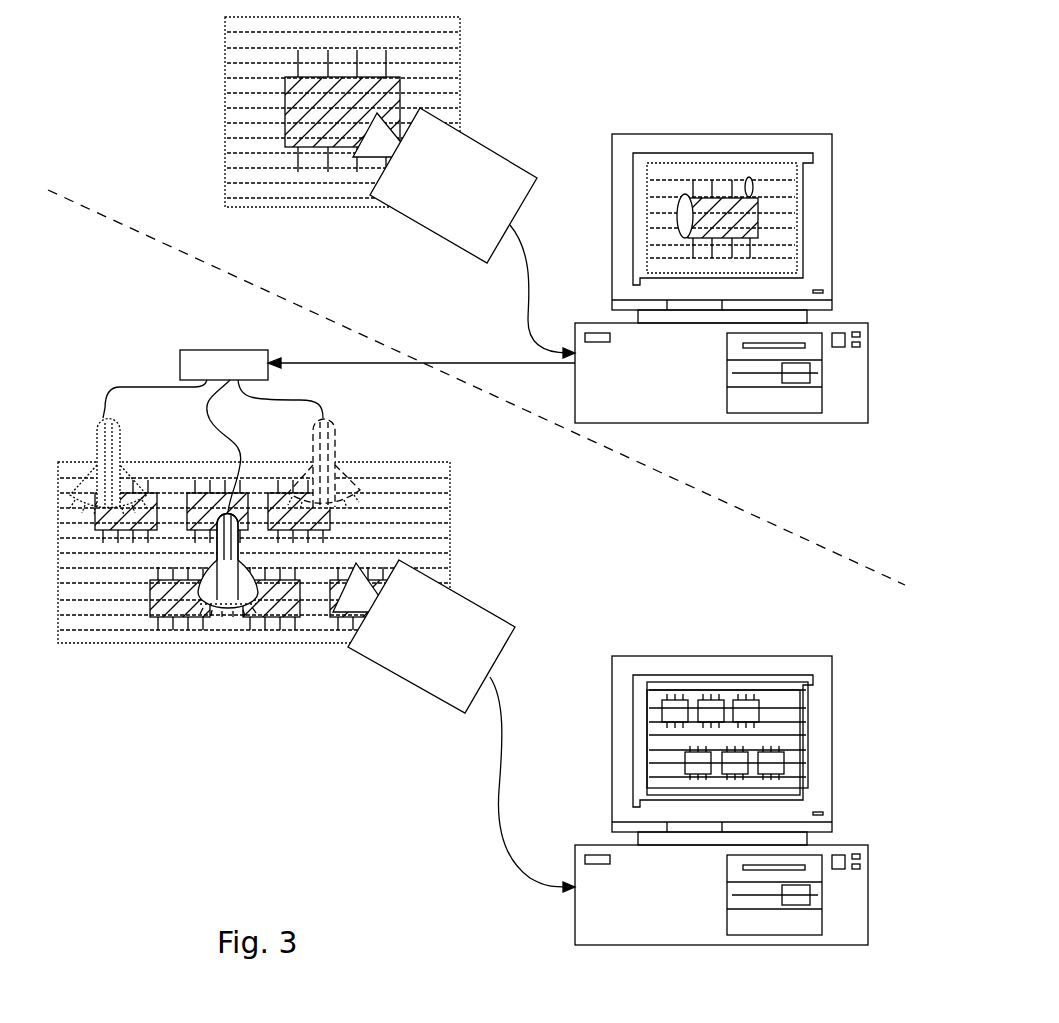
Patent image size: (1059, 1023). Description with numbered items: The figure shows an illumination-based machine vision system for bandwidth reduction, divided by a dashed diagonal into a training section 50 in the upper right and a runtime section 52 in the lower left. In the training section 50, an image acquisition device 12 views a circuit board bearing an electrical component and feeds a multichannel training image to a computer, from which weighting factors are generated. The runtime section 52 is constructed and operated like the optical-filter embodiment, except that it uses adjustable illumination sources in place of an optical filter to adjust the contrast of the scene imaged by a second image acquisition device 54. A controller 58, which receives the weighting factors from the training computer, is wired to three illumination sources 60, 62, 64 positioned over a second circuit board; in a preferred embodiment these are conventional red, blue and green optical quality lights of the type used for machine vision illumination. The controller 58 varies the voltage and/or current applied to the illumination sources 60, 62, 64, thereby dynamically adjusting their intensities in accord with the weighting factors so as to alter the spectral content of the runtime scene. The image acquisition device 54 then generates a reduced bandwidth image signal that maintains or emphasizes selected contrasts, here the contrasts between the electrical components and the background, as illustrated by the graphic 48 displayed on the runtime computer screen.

The image acquisition device 12 is at (487, 142).
The graphic 48 is at (798, 722).
The training section 50 is at (840, 482).
The runtime section 52 is at (780, 610).
The image acquisition device 54 is at (392, 662).
The controller 58 is at (183, 352).
The illumination source 60 is at (122, 453).
The illumination source 62 is at (203, 603).
The illumination source 64 is at (337, 448).